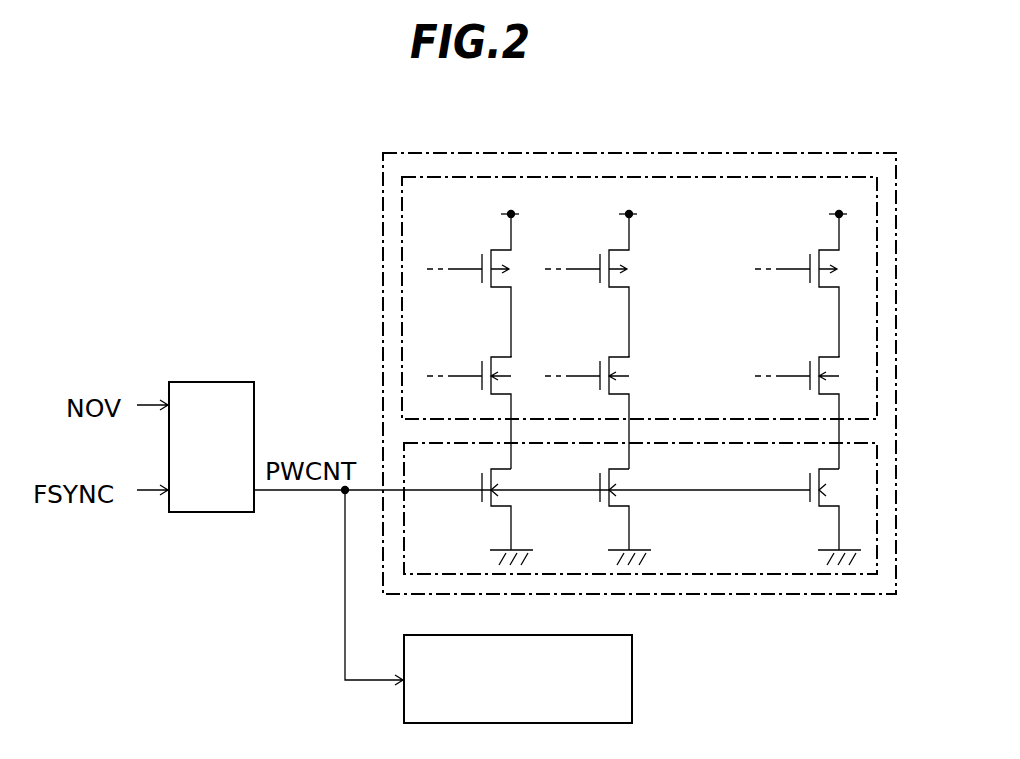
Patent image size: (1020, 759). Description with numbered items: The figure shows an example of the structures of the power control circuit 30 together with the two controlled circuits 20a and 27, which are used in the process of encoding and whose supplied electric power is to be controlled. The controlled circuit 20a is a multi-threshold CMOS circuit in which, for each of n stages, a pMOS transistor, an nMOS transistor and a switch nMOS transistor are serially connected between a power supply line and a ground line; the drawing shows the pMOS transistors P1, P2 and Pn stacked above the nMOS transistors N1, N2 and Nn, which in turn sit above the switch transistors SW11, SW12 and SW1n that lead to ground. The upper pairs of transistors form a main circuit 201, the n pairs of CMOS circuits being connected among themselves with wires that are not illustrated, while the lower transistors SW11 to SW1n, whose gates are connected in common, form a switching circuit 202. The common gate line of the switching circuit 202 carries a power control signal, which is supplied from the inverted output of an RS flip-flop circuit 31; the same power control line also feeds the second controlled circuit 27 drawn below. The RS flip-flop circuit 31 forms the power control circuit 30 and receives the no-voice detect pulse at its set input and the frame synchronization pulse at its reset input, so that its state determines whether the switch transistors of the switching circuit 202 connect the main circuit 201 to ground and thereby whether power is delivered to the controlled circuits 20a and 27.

The circuit 20a is at (746, 151).
The main circuit 201 is at (401, 254).
The switching circuit 202 is at (712, 576).
The circuit 27 is at (633, 668).
The RS flip-flop circuit 31 is at (202, 382).
The power control circuit 30 is at (199, 414).
The pMOS transistor P1 is at (503, 287).
The pMOS transistor P2 is at (621, 287).
The pMOS transistor Pn is at (831, 287).
The nMOS transistor N1 is at (503, 357).
The nMOS transistor N2 is at (621, 357).
The nMOS transistor Nn is at (831, 357).
The nMOS transistor SW11 is at (502, 508).
The nMOS transistor SW12 is at (620, 508).
The nMOS transistor SW1n is at (830, 508).